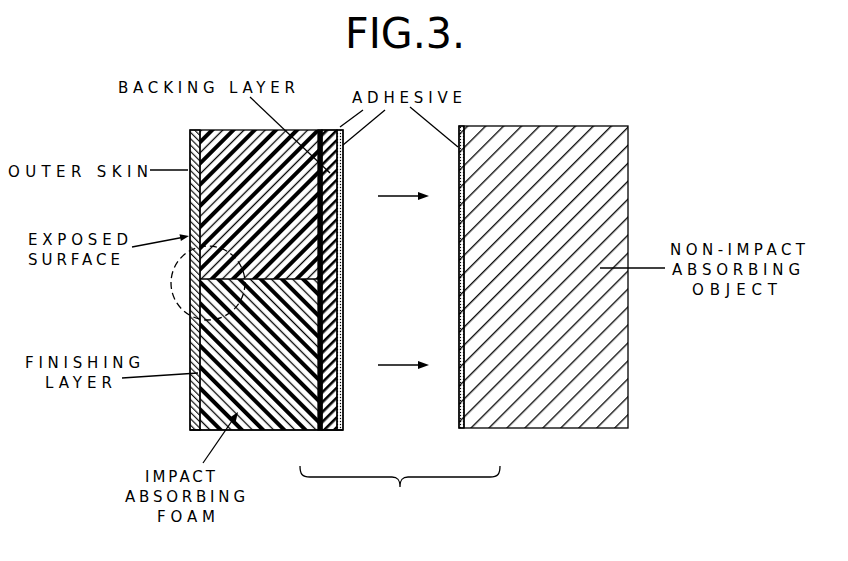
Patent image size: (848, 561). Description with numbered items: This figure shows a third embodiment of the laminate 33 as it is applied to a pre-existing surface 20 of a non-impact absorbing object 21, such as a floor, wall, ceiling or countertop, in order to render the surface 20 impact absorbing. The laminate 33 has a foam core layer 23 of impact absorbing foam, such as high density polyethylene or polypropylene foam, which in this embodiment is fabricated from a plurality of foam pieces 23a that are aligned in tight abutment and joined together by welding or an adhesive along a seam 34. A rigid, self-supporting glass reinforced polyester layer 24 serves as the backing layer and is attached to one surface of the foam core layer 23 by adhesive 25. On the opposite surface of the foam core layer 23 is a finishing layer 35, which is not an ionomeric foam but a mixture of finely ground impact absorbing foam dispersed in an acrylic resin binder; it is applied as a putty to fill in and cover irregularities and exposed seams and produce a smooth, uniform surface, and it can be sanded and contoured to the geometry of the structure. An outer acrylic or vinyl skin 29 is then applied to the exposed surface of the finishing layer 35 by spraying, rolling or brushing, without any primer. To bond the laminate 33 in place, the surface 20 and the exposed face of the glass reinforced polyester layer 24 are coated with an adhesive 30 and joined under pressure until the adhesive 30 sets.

The pre-existing surface 20 is at (464, 398).
The non-impact absorbing object 21 is at (603, 344).
The foam core layer 23 is at (196, 399).
The foam pieces 23a is at (228, 136).
The glass reinforced polyester layer 24 is at (328, 431).
The adhesive 25 is at (322, 331).
The outer skin 29 is at (199, 334).
The adhesive 30 is at (343, 240).
The laminate 33 is at (176, 143).
The seam 34 is at (278, 279).
The finishing layer 35 is at (196, 433).